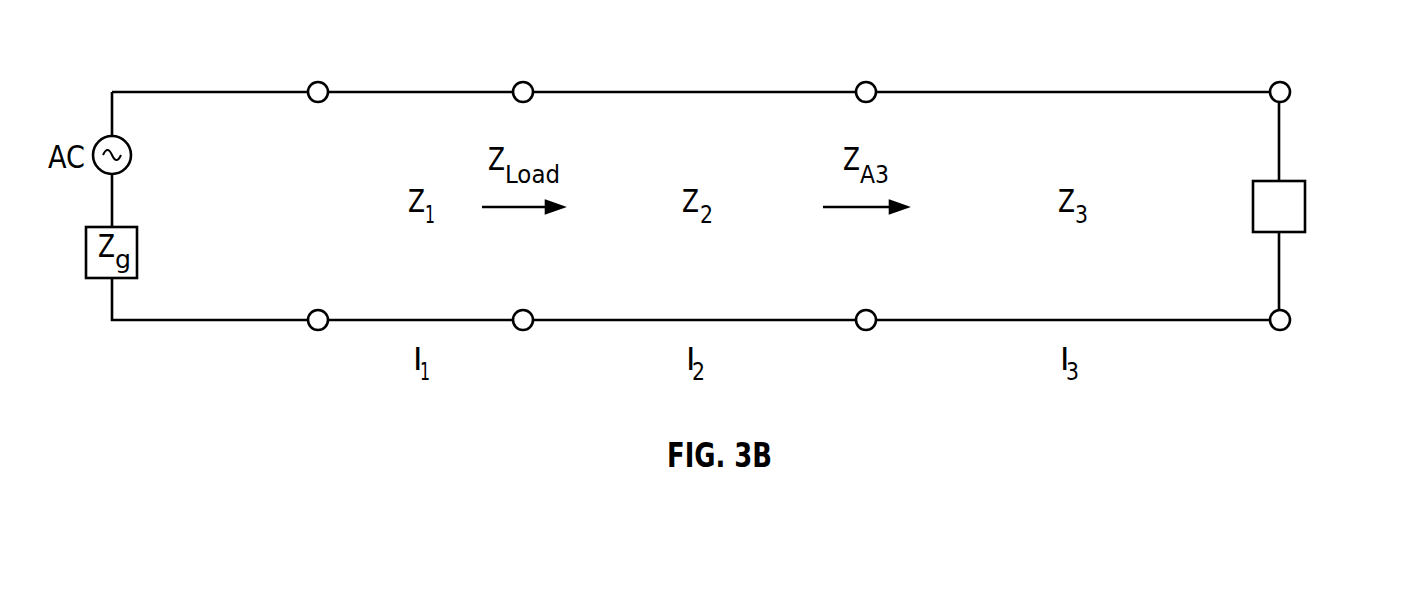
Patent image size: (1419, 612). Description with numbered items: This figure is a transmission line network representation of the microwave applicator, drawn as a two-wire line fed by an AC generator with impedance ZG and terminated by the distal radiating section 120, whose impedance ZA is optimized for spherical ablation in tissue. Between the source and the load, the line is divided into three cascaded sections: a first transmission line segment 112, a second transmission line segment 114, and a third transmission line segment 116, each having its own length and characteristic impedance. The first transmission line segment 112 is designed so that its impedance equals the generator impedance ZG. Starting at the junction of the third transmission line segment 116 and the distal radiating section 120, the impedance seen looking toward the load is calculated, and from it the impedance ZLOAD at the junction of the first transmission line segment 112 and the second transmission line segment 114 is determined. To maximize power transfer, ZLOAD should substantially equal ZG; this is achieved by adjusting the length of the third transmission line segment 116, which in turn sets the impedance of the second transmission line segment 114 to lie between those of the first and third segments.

The first transmission line segment 112 is at (523, 77).
The second transmission line segment 114 is at (866, 77).
The third transmission line segment 116 is at (1280, 77).
The distal radiating section 120 is at (1308, 92).